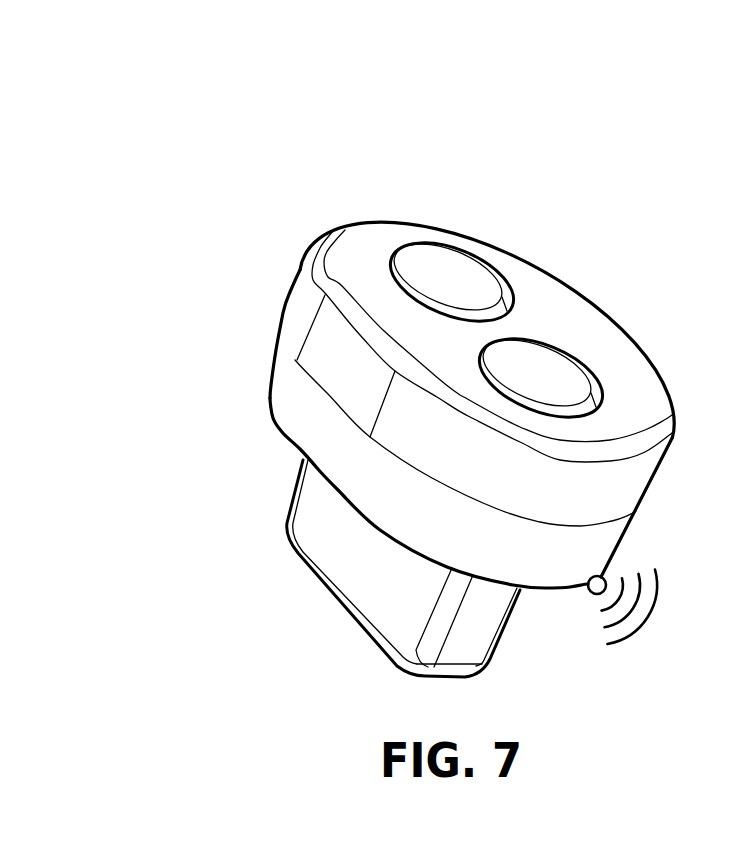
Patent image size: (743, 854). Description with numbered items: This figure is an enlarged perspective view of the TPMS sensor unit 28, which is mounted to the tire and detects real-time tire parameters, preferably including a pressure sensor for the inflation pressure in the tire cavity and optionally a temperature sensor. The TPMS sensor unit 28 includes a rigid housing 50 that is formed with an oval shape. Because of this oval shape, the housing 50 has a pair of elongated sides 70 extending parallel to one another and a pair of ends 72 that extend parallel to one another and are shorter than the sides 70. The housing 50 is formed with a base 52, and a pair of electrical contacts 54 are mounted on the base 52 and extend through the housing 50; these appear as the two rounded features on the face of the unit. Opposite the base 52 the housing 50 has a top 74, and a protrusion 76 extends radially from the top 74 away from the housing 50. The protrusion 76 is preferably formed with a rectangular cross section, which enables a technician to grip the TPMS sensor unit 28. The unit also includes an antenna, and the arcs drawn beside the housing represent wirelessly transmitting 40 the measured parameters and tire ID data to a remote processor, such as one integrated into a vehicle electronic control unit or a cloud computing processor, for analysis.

The TPMS sensor unit 28 is at (436, 408).
The wireless transmitting 40 is at (650, 607).
The housing 50 is at (300, 270).
The base 52 is at (360, 247).
The electrical contacts 54 is at (446, 267).
The elongated sides 70 is at (327, 393).
The ends 72 is at (623, 520).
The top 74 is at (527, 588).
The protrusion 76 is at (331, 594).